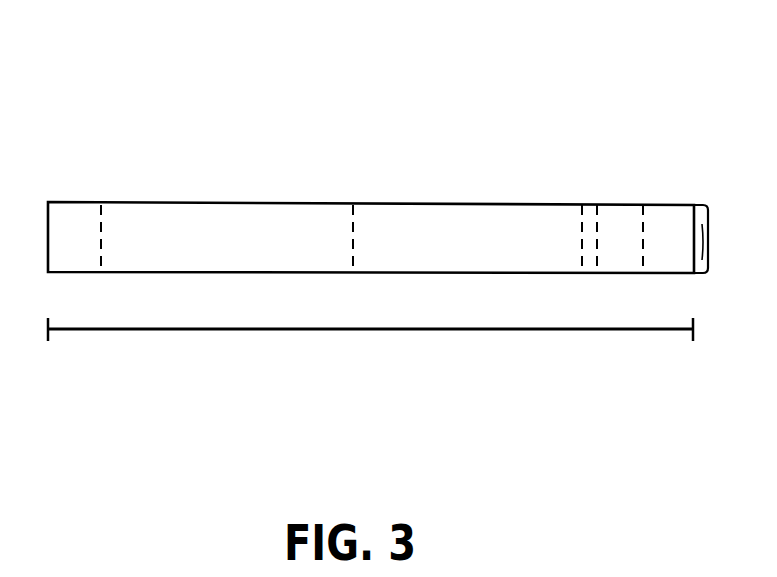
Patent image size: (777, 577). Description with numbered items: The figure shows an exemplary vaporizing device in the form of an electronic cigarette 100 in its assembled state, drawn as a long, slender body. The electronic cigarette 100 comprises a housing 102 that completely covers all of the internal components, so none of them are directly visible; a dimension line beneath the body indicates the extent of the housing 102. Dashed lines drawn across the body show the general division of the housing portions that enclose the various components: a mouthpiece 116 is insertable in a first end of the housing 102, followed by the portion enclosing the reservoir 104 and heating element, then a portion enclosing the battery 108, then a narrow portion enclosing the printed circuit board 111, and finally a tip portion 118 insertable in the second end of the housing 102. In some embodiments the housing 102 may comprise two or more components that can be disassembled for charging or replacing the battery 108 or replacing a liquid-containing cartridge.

The electronic cigarette 100 is at (75, 56).
The housing 102 is at (370, 344).
The reservoir 104 is at (210, 232).
The battery 108 is at (454, 227).
The printed circuit board 111 is at (591, 228).
The mouthpiece 116 is at (76, 229).
The tip portion 118 is at (677, 230).